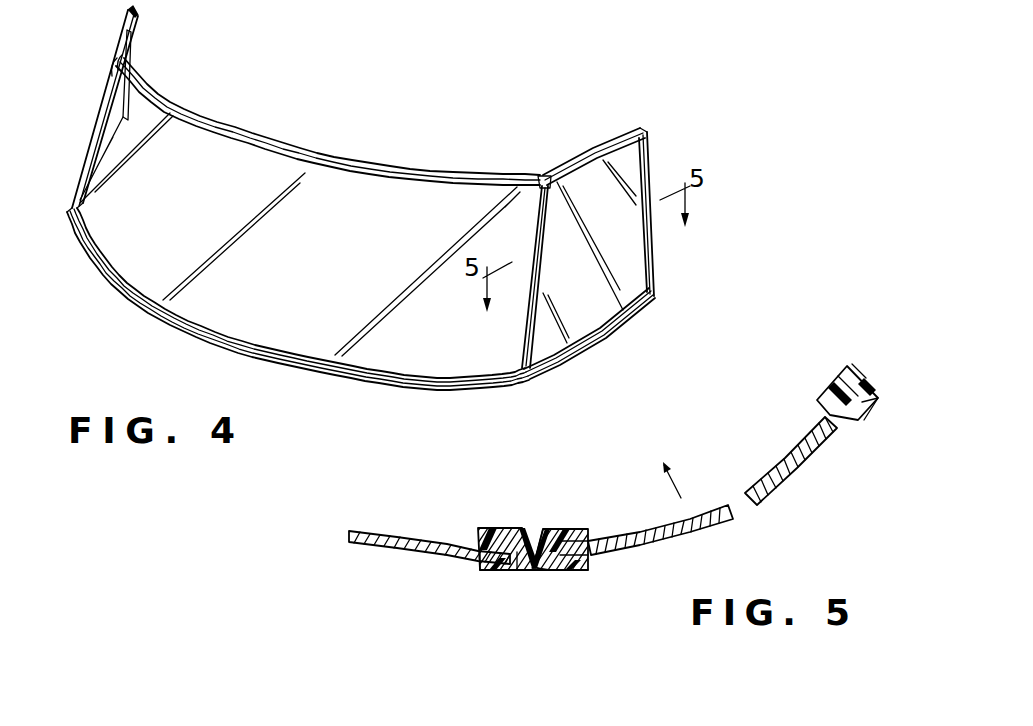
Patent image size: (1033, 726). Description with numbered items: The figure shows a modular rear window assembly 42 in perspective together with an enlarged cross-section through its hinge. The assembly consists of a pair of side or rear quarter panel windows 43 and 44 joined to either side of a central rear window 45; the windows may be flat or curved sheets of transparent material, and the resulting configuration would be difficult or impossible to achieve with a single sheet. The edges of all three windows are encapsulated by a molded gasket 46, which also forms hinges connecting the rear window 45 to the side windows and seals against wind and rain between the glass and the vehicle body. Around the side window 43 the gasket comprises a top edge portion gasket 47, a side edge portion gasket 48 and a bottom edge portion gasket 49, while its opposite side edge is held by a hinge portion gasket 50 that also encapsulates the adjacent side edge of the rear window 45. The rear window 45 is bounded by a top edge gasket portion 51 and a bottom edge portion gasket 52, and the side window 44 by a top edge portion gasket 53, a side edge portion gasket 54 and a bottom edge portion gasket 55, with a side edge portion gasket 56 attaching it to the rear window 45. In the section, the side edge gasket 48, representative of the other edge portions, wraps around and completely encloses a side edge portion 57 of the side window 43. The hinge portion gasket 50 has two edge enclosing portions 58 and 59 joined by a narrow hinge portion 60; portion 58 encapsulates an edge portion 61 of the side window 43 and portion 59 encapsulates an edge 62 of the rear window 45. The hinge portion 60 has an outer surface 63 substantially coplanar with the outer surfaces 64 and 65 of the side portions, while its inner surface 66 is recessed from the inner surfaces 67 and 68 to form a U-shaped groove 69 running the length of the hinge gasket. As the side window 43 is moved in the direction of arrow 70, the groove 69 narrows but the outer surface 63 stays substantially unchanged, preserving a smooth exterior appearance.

In FIG. 4, the modular rear window assembly 42 is at (482, 78).
In FIG. 4, the side window 43 is at (588, 190).
In FIG. 5, the side window 43 is at (757, 507).
In FIG. 4, the side window 44 is at (124, 53).
In FIG. 4, the rear window 45 is at (316, 187).
In FIG. 5, the rear window 45 is at (370, 548).
In FIG. 4, the gasket 46 is at (255, 130).
In FIG. 4, the top edge portion gasket 47 is at (628, 133).
In FIG. 4, the side edge portion gasket 48 is at (650, 153).
In FIG. 5, the side edge portion gasket 48 is at (830, 392).
In FIG. 4, the bottom edge portion gasket 49 is at (604, 336).
In FIG. 4, the hinge portion gasket 50 is at (532, 343).
In FIG. 5, the hinge portion gasket 50 is at (550, 527).
In FIG. 4, the top edge gasket portion 51 is at (441, 175).
In FIG. 4, the bottom edge portion gasket 52 is at (270, 372).
In FIG. 4, the top edge portion gasket 53 is at (124, 32).
In FIG. 4, the side edge portion gasket 54 is at (137, 45).
In FIG. 4, the bottom edge portion gasket 55 is at (114, 140).
In FIG. 4, the side edge portion gasket 56 is at (90, 150).
In FIG. 5, the side edge portion 57 is at (853, 398).
In FIG. 5, the edge enclosing portion 58 is at (602, 572).
In FIG. 5, the edge enclosing portion 59 is at (476, 574).
In FIG. 5, the hinge portion 60 is at (547, 574).
In FIG. 5, the edge portion 61 is at (592, 541).
In FIG. 5, the edge 62 is at (503, 540).
In FIG. 5, the outer surface 63 is at (535, 578).
In FIG. 5, the outer surface 64 is at (576, 575).
In FIG. 5, the outer surface 65 is at (506, 571).
In FIG. 5, the inner surface 66 is at (534, 556).
In FIG. 5, the inner surface 67 is at (580, 538).
In FIG. 5, the inner surface 68 is at (489, 528).
In FIG. 4, the U-shaped groove 69 is at (541, 178).
In FIG. 5, the U-shaped groove 69 is at (537, 532).
In FIG. 5, the arrow 70 is at (675, 483).